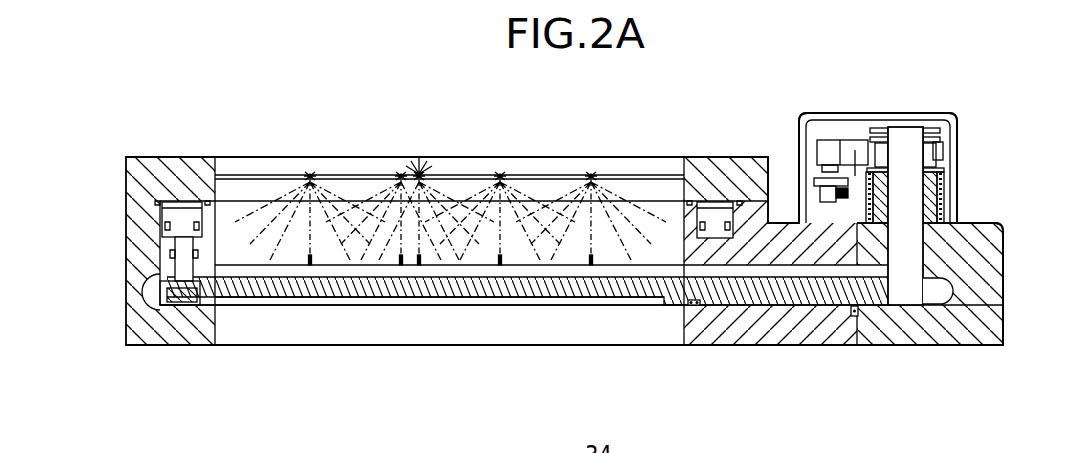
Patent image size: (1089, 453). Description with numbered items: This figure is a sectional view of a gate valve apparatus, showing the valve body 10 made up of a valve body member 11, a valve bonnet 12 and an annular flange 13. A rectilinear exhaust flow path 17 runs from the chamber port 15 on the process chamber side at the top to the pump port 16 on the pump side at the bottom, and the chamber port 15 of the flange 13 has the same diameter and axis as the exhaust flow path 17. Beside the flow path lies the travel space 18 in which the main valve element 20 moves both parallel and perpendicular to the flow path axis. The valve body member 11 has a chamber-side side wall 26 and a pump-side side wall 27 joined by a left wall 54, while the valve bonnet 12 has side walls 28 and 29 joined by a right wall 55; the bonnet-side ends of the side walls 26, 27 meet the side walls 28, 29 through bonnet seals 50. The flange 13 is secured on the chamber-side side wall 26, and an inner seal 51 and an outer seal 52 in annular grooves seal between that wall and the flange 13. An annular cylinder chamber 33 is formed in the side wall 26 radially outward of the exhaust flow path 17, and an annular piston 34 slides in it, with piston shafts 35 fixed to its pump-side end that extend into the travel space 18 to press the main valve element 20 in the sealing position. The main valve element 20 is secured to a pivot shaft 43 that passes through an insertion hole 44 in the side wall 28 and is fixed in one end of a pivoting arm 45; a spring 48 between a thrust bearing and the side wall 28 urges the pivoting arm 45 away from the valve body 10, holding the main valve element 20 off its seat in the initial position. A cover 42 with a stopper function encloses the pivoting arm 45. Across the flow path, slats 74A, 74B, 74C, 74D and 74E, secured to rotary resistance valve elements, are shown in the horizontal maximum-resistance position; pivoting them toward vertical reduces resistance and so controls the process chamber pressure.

The valve body 10 is at (116, 147).
The valve body member 11 is at (710, 345).
The valve bonnet 12 is at (947, 345).
The flange 13 is at (718, 157).
The chamber port 15 is at (651, 157).
The pump port 16 is at (643, 345).
The exhaust flow path 17 is at (396, 306).
The travel space 18 is at (168, 268).
The main valve element 20 is at (512, 297).
The chamber-side side wall 26 is at (774, 222).
The pump-side side wall 27 is at (768, 345).
The side wall of valve bonnet 28 is at (1003, 233).
The side wall of valve bonnet 29 is at (902, 345).
The annular cylinder chamber 33 is at (158, 233).
The annular piston 34 is at (183, 217).
The piston shaft 35 is at (184, 251).
The cover 42 is at (912, 113).
The pivot shaft 43 is at (908, 273).
The insertion hole 44 is at (922, 243).
The pivoting arm 45 is at (860, 152).
The spring 48 is at (944, 180).
The bonnet seal 50 is at (688, 262).
The inner seal 51 is at (694, 157).
The outer seal 52 is at (165, 205).
The left wall 54 is at (145, 283).
The right wall 55 is at (1003, 299).
The slat 74A is at (262, 157).
The slat 74B is at (369, 157).
The slat 74C is at (448, 157).
The slat 74D is at (533, 157).
The slat 74E is at (615, 157).